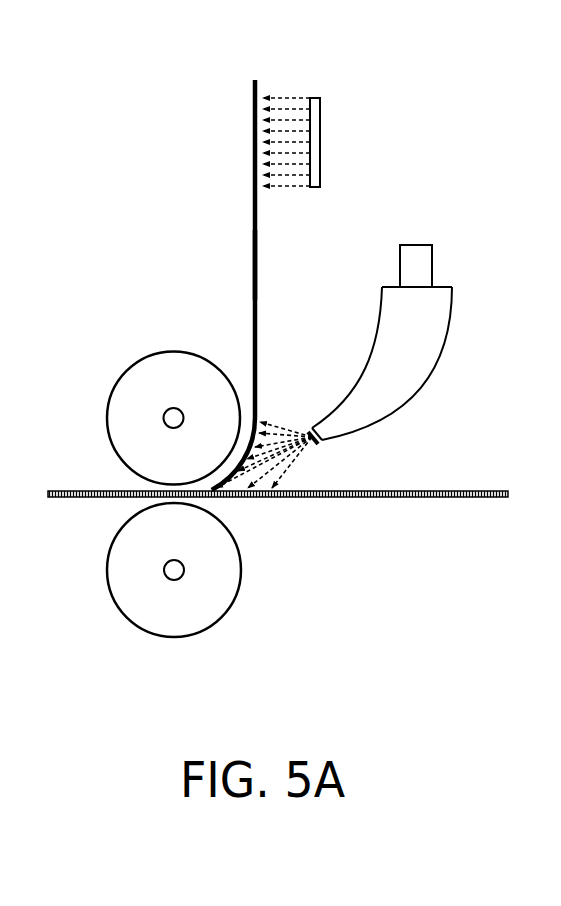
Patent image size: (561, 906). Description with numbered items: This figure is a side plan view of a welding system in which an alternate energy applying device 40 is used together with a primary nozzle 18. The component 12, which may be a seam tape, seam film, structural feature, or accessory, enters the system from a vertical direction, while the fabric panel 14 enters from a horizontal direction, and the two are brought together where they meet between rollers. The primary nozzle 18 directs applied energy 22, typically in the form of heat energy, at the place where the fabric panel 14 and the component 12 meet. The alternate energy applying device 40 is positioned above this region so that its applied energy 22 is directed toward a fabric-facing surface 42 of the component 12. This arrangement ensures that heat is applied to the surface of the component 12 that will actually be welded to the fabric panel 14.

The component 12 is at (230, 170).
The fabric panel 14 is at (406, 498).
The primary nozzle 18 is at (424, 353).
The applied energy 22 is at (285, 110).
The alternate energy applying device 40 is at (322, 145).
The fabric-facing surface 42 is at (258, 260).